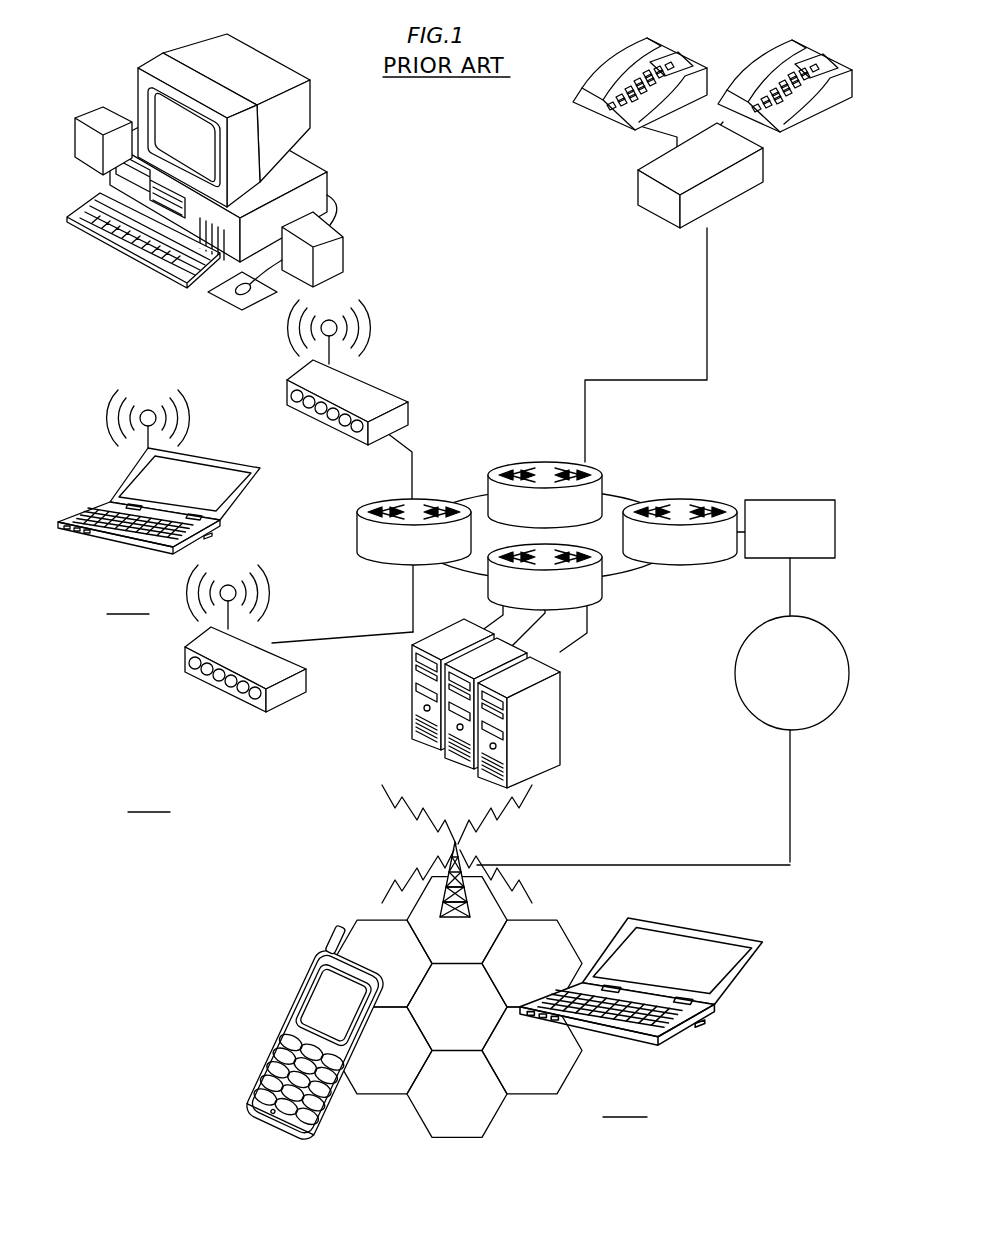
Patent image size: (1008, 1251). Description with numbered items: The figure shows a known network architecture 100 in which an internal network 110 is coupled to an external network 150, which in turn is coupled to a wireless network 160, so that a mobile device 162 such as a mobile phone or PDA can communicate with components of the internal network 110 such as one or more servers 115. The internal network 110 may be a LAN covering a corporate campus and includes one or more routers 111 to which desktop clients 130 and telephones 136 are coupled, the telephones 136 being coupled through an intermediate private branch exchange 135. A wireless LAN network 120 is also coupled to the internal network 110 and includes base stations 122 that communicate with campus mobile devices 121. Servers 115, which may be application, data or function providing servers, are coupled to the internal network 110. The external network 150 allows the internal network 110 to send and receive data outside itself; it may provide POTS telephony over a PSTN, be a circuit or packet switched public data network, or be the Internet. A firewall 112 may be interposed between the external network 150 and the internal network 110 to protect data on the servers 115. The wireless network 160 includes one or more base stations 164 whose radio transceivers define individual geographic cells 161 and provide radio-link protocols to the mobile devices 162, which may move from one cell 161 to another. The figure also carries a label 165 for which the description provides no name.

The network architecture 100 is at (149, 800).
The internal network 110 is at (539, 443).
The routers 111 is at (545, 462).
The firewall 112 is at (790, 500).
The servers 115 is at (570, 727).
The wireless LAN network (WLAN) 120 is at (128, 602).
The campus mobile devices 121 is at (248, 492).
The base stations 122 is at (370, 378).
The desktop clients 130 is at (288, 130).
The private branch exchange (PBX) 135 is at (638, 183).
The telephones 136 is at (823, 45).
The external network 150 is at (748, 645).
The wireless network 160 is at (480, 964).
The geographic cells 161 is at (575, 930).
The mobile device 162 is at (290, 1008).
The base stations 164 is at (446, 875).
The wireless network 165 is at (480, 964).